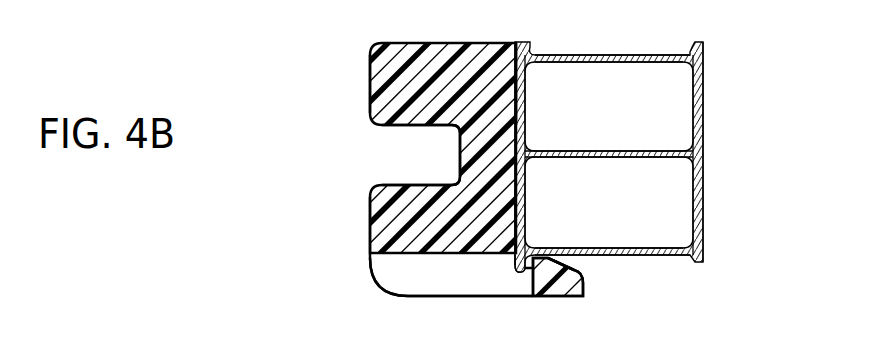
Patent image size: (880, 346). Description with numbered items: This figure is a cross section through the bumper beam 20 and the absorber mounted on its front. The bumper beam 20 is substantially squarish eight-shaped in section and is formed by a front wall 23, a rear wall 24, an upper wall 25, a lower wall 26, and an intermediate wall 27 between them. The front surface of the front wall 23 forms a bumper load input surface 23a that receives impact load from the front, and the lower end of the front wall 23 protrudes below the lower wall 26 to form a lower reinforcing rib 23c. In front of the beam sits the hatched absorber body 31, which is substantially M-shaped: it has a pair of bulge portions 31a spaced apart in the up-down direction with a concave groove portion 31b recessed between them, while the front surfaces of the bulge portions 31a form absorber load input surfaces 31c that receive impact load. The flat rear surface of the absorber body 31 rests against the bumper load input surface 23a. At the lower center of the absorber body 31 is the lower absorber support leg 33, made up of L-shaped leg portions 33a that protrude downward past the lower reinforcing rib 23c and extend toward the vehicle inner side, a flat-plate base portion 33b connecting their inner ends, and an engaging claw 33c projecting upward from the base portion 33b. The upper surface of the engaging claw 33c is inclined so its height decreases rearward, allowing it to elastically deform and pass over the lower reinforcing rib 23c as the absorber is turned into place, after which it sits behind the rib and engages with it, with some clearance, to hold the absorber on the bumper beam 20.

The bumper beam 20 is at (706, 181).
The front wall 23 is at (525, 118).
The bumper load input surface 23a is at (522, 233).
The lower reinforcing rib 23c is at (521, 273).
The rear wall 24 is at (705, 105).
The upper wall 25 is at (602, 55).
The lower wall 26 is at (600, 249).
The intermediate wall 27 is at (602, 151).
The absorber body 31 is at (440, 43).
The bulge portions 31a is at (370, 68).
The concave groove portion 31b is at (417, 128).
The absorber load input surfaces 31c is at (370, 91).
The lower absorber support leg 33 is at (374, 268).
The leg portions 33a is at (398, 274).
The base portion 33b is at (560, 298).
The engaging claw 33c is at (562, 262).